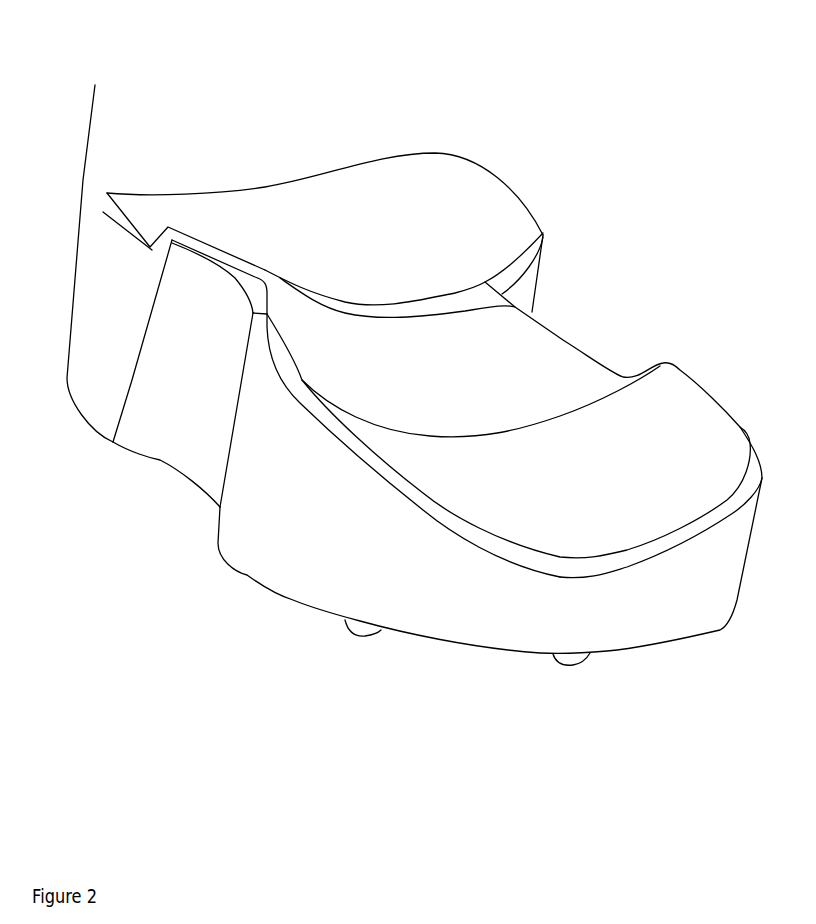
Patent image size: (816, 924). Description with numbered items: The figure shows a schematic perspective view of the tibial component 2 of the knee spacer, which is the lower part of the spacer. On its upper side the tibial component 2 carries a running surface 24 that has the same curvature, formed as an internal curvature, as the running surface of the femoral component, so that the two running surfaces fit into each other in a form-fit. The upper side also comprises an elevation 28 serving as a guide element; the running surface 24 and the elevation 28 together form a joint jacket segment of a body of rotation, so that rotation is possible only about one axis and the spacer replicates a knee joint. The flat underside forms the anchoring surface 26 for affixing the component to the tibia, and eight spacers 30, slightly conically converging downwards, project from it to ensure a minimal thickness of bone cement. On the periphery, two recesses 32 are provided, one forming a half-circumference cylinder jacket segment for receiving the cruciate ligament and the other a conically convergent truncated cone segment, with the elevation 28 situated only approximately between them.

The tibial component 2 is at (187, 78).
The running surface 24 is at (430, 213).
The anchoring surface 26 is at (293, 603).
The elevation 28 is at (380, 317).
The spacers 30 is at (360, 627).
The recesses 32 is at (193, 363).